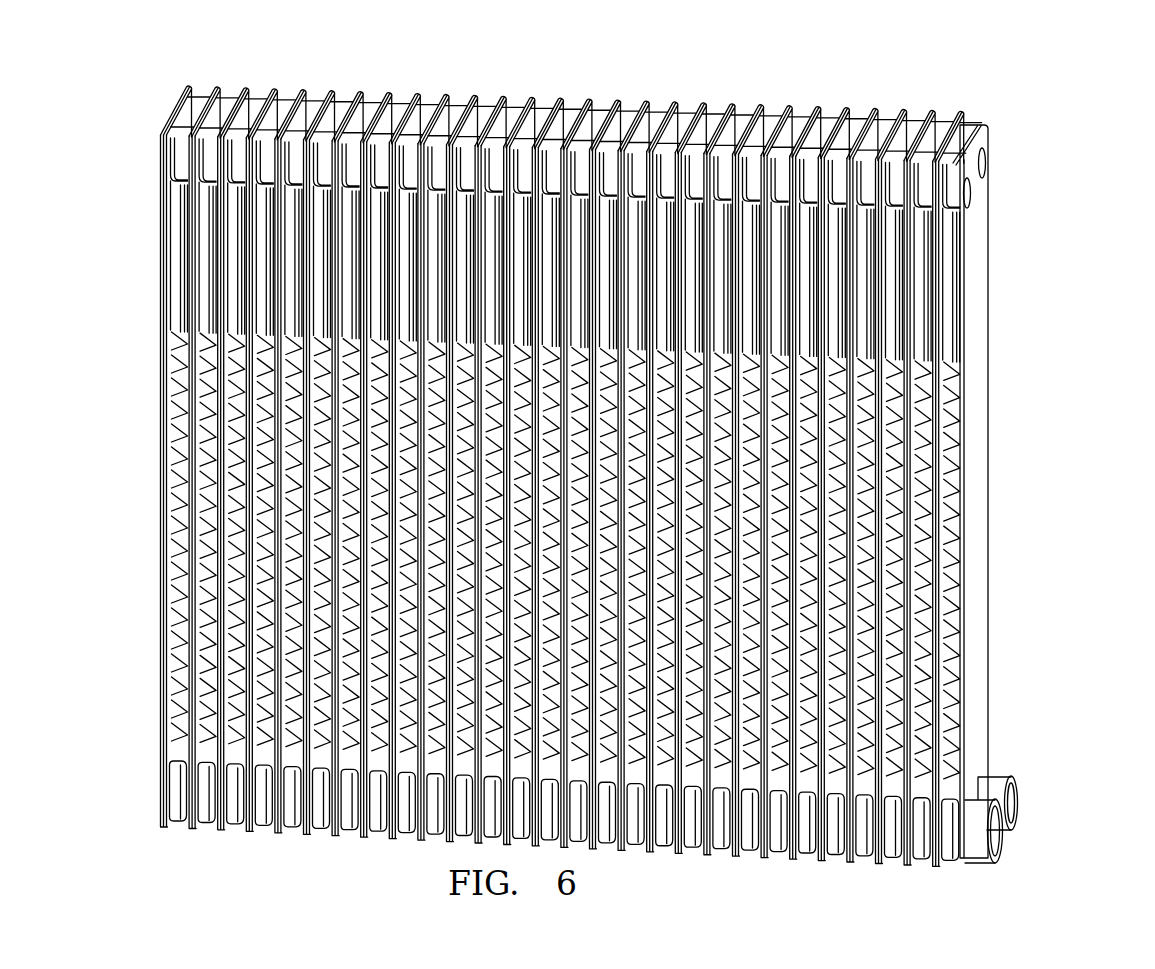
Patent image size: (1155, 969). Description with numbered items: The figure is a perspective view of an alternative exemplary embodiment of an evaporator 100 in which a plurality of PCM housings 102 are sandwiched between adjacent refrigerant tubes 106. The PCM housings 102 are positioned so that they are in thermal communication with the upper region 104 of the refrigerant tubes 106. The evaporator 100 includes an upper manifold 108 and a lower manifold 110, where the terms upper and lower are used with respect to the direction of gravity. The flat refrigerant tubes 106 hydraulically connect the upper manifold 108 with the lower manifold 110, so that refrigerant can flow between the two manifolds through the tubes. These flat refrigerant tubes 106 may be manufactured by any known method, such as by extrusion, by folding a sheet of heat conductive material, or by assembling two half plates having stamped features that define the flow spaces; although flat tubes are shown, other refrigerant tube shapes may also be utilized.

The evaporator 100 is at (599, 479).
The PCM housing 102 is at (937, 302).
The upper region 104 is at (130, 175).
The refrigerant tube 106 is at (392, 757).
The upper manifold 108 is at (705, 118).
The lower manifold 110 is at (742, 805).